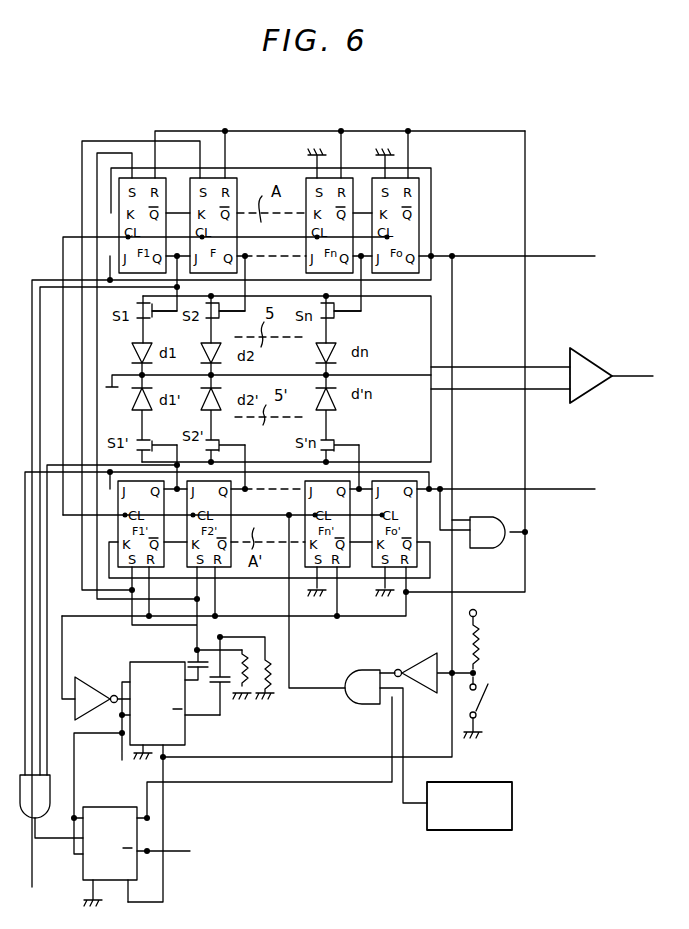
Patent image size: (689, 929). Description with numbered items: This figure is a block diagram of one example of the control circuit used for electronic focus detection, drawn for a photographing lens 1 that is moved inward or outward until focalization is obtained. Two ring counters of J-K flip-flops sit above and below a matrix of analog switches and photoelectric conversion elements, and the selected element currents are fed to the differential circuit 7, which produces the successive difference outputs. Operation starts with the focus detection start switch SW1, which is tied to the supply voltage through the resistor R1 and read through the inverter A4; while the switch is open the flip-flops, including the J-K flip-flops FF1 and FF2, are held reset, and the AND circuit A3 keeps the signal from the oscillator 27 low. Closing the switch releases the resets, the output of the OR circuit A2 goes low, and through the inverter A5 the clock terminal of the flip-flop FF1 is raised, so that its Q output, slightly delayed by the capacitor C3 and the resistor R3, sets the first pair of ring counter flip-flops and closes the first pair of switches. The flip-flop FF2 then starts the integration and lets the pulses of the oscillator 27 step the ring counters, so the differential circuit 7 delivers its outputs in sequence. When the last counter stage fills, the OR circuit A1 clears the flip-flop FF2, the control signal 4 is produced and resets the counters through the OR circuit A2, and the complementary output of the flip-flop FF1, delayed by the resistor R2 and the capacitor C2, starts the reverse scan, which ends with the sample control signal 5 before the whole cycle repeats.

The photographing lens 1 is at (202, 851).
The control signal 4 is at (518, 489).
The sample control signal 5 is at (607, 256).
The differential circuit 7 is at (592, 359).
The oscillator 27 is at (512, 805).
The OR circuit A1 is at (51, 806).
The OR circuit A2 is at (497, 532).
The AND circuit A3 is at (386, 736).
The inverter A4 is at (434, 673).
The inverter A5 is at (102, 698).
The J-K flip-flop FF1 is at (164, 782).
The J-K flip-flop FF2 is at (233, 801).
The capacitor C2 is at (216, 700).
The capacitor C3 is at (193, 658).
The resistor R1 is at (478, 643).
The resistor R2 is at (268, 692).
The resistor R3 is at (265, 664).
The focus detection start switch SW1 is at (489, 707).